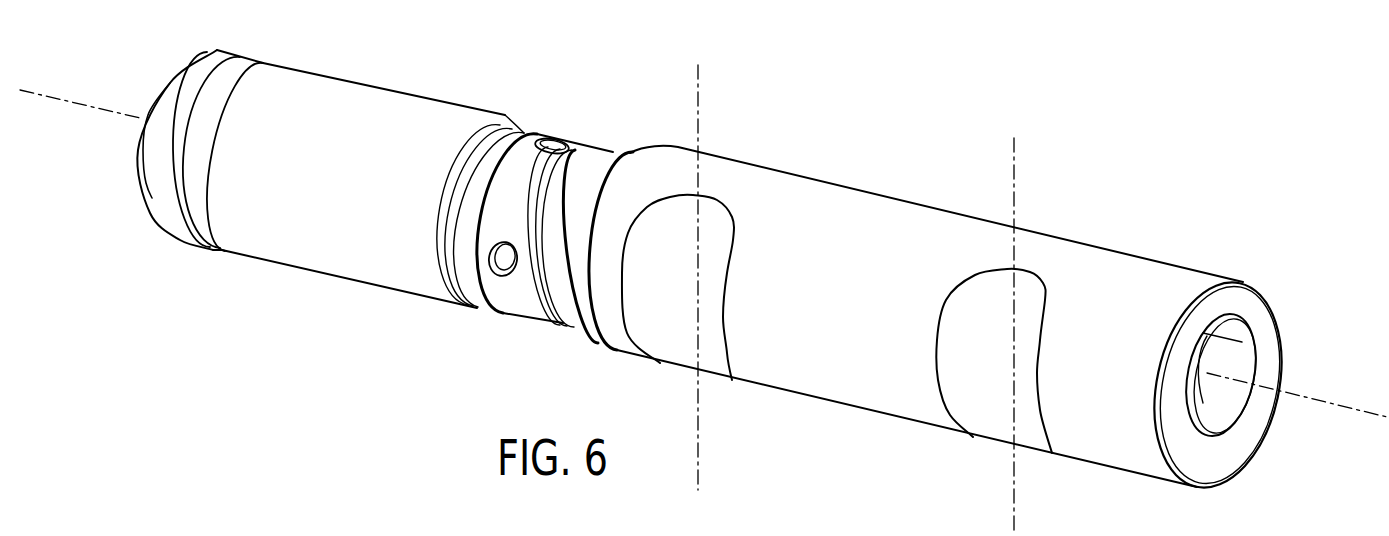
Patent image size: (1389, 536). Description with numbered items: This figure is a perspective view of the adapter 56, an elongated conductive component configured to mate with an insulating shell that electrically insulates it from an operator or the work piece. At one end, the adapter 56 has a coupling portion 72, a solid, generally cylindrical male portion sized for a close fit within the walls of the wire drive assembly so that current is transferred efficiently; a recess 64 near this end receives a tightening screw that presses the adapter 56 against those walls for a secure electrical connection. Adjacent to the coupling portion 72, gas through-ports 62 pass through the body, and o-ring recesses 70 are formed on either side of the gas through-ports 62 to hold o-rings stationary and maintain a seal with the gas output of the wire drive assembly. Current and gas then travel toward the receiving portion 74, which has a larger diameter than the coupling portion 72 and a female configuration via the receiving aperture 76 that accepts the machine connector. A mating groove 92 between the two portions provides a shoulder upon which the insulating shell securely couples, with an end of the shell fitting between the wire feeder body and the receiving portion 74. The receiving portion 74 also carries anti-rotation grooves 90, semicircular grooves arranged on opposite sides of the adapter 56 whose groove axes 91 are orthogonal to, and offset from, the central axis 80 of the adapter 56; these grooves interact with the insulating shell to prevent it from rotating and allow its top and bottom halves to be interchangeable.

The adapter 56 is at (703, 283).
The gas through-ports 62 is at (502, 240).
The recess 64 is at (220, 83).
The o-ring recesses 70 is at (560, 290).
The coupling portion 72 is at (332, 250).
The receiving portion 74 is at (980, 323).
The receiving aperture 76 is at (1233, 367).
The central axis 80 is at (1350, 407).
The anti-rotation grooves 90 is at (720, 367).
The groove axes 91 is at (703, 104).
The mating groove 92 is at (634, 152).